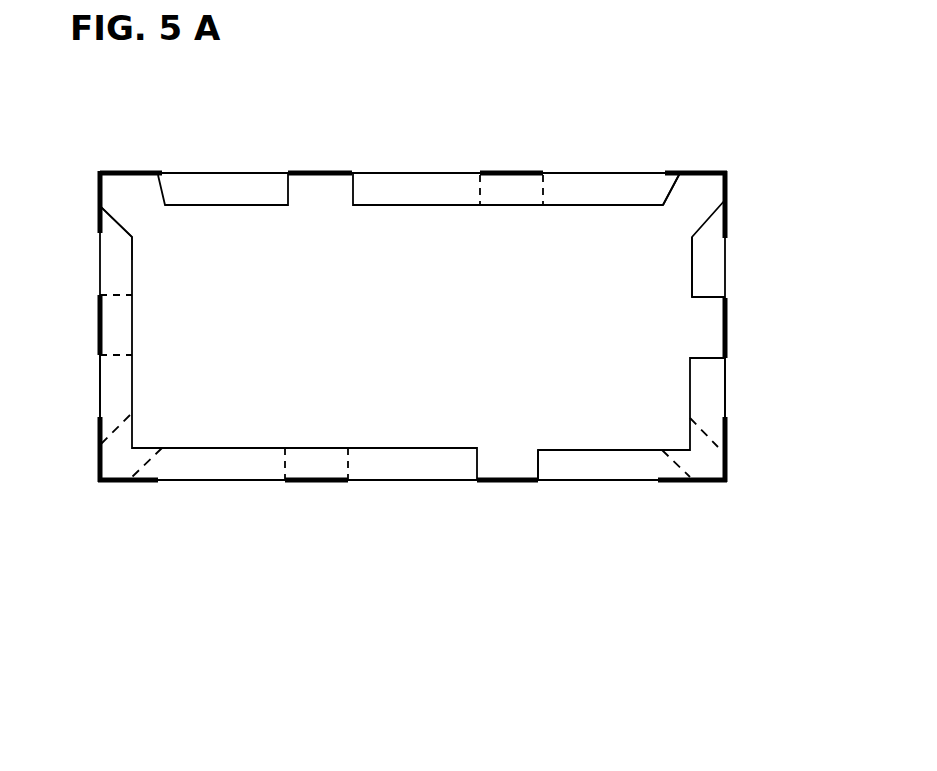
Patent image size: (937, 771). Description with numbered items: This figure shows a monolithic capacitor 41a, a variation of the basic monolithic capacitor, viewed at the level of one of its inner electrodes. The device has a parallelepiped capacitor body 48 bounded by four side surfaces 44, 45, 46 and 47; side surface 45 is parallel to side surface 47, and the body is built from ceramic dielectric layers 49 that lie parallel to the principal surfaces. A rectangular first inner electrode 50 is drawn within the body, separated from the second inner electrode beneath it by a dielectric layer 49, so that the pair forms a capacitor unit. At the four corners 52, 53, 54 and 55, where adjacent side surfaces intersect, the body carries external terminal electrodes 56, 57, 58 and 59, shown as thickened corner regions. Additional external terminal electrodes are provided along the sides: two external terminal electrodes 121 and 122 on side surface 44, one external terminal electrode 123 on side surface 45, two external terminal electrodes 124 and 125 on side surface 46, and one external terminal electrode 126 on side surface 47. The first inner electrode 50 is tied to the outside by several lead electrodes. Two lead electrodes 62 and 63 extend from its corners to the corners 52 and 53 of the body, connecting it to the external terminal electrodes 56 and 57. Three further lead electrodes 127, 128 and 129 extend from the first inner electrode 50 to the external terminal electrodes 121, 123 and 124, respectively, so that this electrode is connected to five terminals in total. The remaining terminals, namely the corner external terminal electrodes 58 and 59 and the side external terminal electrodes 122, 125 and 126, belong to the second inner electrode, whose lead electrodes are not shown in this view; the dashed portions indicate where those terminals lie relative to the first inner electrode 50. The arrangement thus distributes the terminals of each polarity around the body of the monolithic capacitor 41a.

The monolithic capacitor 41a is at (70, 113).
The side surface 44 is at (437, 178).
The side surface 45 is at (720, 388).
The side surface 46 is at (405, 480).
The side surface 47 is at (98, 397).
The capacitor body 48 is at (584, 172).
The dielectric layer 49 is at (388, 180).
The first inner electrode 50 is at (698, 264).
The corner 52 is at (100, 173).
The corner 53 is at (717, 172).
The corner 54 is at (715, 485).
The corner 55 is at (97, 478).
The external terminal electrode 56 is at (98, 205).
The external terminal electrode 57 is at (725, 198).
The external terminal electrode 58 is at (722, 457).
The external terminal electrode 59 is at (97, 440).
The lead electrode 62 is at (127, 203).
The lead electrode 63 is at (688, 196).
The external terminal electrode 121 is at (312, 173).
The external terminal electrode 122 is at (505, 172).
The external terminal electrode 123 is at (722, 335).
The external terminal electrode 124 is at (507, 485).
The external terminal electrode 125 is at (312, 483).
The external terminal electrode 126 is at (98, 325).
The lead electrode 127 is at (295, 190).
The lead electrode 128 is at (701, 305).
The lead electrode 129 is at (533, 468).